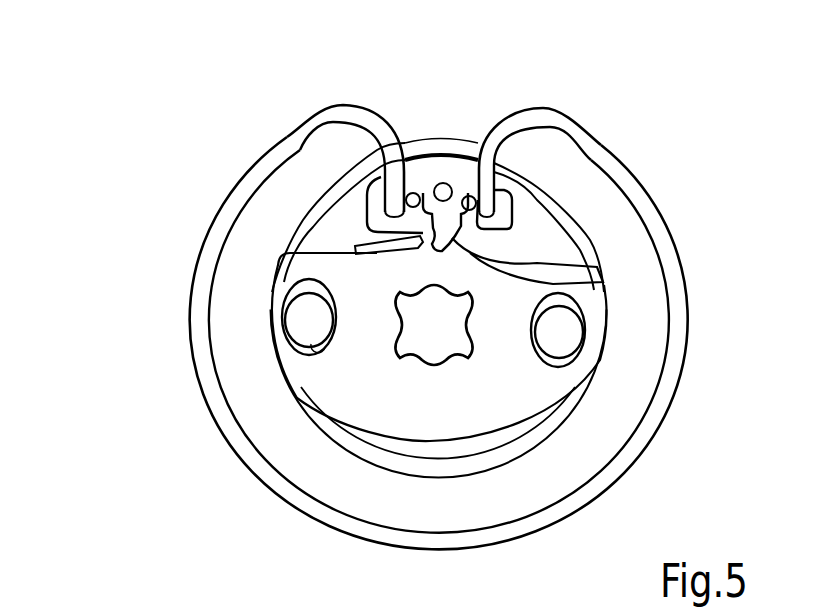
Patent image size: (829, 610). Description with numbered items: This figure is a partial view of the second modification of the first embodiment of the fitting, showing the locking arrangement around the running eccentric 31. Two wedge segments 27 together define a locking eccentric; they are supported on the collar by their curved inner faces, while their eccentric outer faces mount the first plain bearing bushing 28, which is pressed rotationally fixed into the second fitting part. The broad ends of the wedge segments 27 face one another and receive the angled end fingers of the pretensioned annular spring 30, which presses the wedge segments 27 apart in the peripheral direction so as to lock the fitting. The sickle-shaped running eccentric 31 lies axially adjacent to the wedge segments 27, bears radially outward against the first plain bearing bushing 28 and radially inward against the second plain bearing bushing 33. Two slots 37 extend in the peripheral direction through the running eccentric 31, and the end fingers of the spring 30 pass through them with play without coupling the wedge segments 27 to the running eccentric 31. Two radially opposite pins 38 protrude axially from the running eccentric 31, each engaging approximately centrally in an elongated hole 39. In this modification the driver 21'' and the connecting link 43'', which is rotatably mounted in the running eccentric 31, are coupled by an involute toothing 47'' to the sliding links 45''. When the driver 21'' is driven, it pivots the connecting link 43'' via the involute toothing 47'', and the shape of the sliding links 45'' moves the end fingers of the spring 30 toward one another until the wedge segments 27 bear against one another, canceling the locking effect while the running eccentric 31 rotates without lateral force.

The driver 21'' is at (347, 347).
The wedge segments 27 is at (412, 193).
The first plain bearing bushing 28 is at (292, 246).
The annular spring 30 is at (300, 130).
The running eccentric 31 is at (322, 189).
The second plain bearing bushing 33 is at (355, 250).
The slots 37 is at (515, 227).
The pins 38 is at (307, 325).
The elongated hole 39 is at (322, 345).
The connecting link 43'' is at (457, 113).
The sliding links 45'' is at (393, 386).
The involute toothing 47'' is at (617, 263).